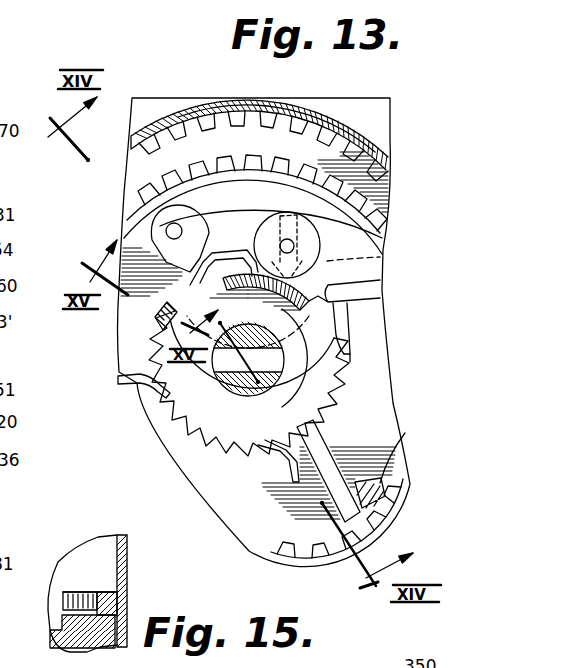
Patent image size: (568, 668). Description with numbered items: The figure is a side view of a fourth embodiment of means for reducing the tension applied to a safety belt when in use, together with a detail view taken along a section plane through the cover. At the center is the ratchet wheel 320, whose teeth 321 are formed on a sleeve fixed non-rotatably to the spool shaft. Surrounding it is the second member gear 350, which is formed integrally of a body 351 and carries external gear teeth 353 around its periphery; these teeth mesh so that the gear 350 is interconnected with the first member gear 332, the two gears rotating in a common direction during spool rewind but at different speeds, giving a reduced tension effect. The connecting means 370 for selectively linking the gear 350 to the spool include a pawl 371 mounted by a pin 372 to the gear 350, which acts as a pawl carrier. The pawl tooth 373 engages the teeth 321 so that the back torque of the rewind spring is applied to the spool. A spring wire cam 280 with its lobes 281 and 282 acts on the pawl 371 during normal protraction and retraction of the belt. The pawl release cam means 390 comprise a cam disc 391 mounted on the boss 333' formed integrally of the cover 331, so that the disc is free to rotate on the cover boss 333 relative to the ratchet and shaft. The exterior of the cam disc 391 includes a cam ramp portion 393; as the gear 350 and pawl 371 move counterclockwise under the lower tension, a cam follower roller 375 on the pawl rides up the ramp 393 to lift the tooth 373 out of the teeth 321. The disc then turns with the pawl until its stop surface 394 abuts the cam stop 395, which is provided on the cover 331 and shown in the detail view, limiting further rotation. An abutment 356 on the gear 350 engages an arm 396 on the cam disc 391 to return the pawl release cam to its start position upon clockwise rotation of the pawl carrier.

In FIG. 13, the spring wire cam 280 is at (350, 327).
In FIG. 13, the lobe 281 is at (218, 258).
In FIG. 13, the lobe 282 is at (340, 357).
In FIG. 13, the ratchet wheel 320 is at (225, 450).
In FIG. 15, the ratchet wheel 320 is at (63, 635).
In FIG. 13, the teeth 321 is at (200, 462).
In FIG. 13, the cover 331 is at (345, 138).
In FIG. 15, the cover 331 is at (153, 559).
In FIG. 13, the gear 332 is at (150, 127).
In FIG. 13, the cover boss 333 is at (313, 497).
In FIG. 13, the boss 333' is at (248, 372).
In FIG. 13, the gear 350 is at (389, 188).
In FIG. 13, the body 351 is at (381, 391).
In FIG. 13, the external gear teeth 353 is at (228, 156).
In FIG. 13, the abutment 356 is at (383, 467).
In FIG. 13, the connecting means 370 is at (389, 155).
In FIG. 13, the pawl 371 is at (250, 217).
In FIG. 13, the pin 372 is at (166, 229).
In FIG. 13, the pawl tooth 373 is at (320, 246).
In FIG. 13, the cam follower roller 375 is at (384, 240).
In FIG. 13, the pawl release cam means 390 is at (140, 399).
In FIG. 13, the cam disc 391 is at (203, 440).
In FIG. 15, the cam disc 391 is at (113, 615).
In FIG. 13, the cam ramp portion 393 is at (380, 298).
In FIG. 13, the stop surface 394 is at (330, 284).
In FIG. 13, the cam stop 395 is at (157, 315).
In FIG. 15, the cam stop 395 is at (82, 592).
In FIG. 13, the arm 396 is at (318, 467).